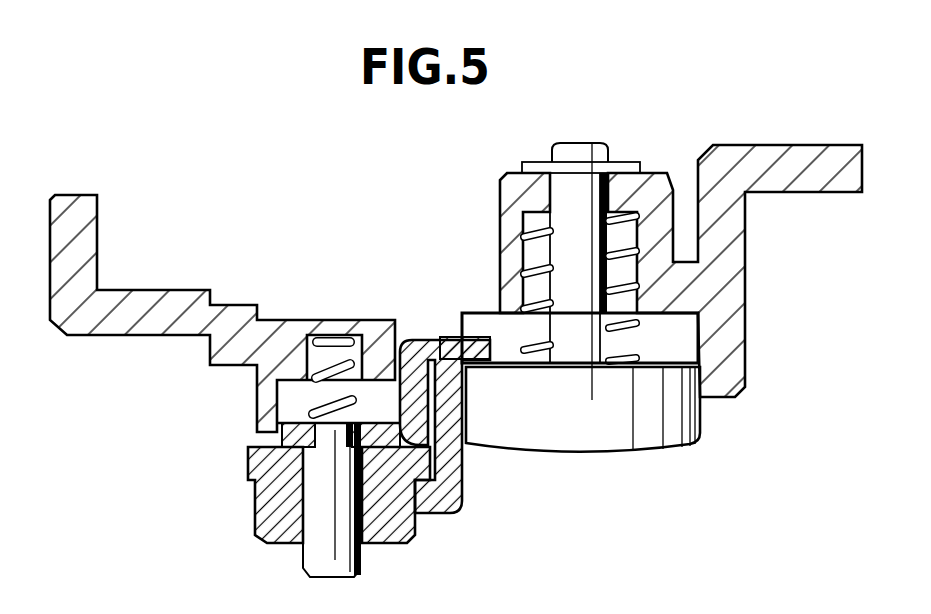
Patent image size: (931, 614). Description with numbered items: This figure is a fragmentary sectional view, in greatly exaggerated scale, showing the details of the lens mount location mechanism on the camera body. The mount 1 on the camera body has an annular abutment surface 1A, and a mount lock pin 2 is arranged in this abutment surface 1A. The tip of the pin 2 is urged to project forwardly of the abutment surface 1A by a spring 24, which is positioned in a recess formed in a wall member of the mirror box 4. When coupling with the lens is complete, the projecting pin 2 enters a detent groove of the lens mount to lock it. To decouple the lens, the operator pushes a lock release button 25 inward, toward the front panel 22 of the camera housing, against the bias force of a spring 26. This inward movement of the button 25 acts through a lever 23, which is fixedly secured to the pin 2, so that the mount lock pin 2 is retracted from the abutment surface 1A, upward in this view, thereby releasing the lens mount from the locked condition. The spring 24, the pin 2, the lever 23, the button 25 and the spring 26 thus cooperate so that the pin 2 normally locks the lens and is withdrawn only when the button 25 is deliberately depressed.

The mount 1 is at (260, 506).
The abutment surface 1A is at (390, 534).
The mount lock pin 2 is at (313, 568).
The mirror box 4 is at (86, 243).
The front panel 22 is at (788, 154).
The lever 23 is at (413, 334).
The spring 24 is at (352, 364).
The lock release button 25 is at (687, 426).
The spring 26 is at (620, 328).